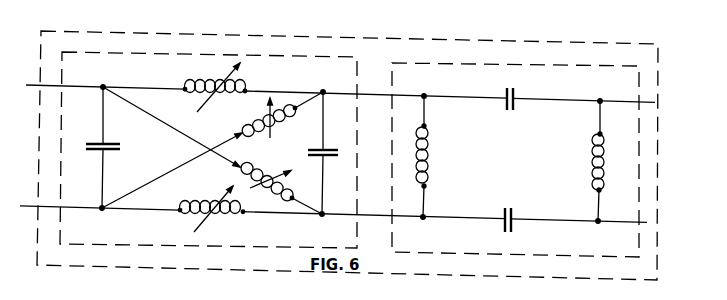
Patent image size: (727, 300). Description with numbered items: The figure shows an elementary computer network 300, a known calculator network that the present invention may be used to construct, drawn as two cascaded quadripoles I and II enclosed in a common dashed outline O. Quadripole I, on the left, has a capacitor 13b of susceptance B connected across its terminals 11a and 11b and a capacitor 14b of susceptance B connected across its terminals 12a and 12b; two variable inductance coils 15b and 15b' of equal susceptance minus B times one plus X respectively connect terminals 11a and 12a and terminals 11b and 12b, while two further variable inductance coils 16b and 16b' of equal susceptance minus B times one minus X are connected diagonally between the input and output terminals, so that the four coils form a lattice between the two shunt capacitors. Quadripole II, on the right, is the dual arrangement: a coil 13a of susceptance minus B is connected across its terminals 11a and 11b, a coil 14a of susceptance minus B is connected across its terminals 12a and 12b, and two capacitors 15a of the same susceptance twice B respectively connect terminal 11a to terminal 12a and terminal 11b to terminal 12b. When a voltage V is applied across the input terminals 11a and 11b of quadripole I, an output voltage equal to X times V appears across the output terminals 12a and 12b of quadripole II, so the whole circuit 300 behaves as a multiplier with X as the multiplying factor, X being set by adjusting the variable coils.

The input terminal 11a is at (262, 82).
The input terminal 11b is at (256, 225).
The output terminal 12a is at (608, 93).
The output terminal 12b is at (605, 236).
The coil 13a is at (428, 156).
The capacitor 13b is at (93, 150).
The coil 14a is at (607, 159).
The capacitor 14b is at (337, 151).
The capacitor 15a is at (513, 212).
The variable inductance coil 15b is at (229, 87).
The variable inductance coil 15b' is at (226, 212).
The variable inductance coil 16b is at (282, 116).
The variable inductance coil 16b' is at (281, 181).
The elementary computer network 300 is at (135, 266).
The quadripole I is at (232, 249).
The quadripole II is at (526, 257).
The overall circuit enclosure O is at (347, 155).